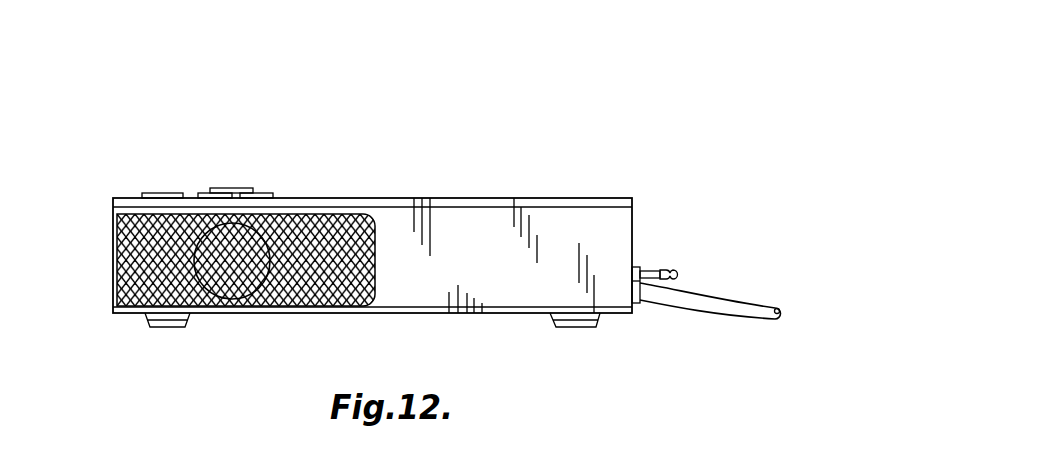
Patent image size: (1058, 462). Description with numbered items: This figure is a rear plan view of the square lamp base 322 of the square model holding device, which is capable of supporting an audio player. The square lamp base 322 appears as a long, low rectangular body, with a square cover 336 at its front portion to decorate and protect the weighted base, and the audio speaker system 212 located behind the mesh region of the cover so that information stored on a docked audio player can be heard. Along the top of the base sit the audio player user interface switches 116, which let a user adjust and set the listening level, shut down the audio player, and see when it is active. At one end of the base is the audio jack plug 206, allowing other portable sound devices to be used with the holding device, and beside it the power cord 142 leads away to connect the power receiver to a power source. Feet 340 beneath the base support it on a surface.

The audio player user interface switches 116 is at (160, 197).
The square lamp base 322 is at (503, 168).
The audio jack plug 206 is at (648, 271).
The power cord 142 is at (716, 306).
The square cover 336 is at (113, 287).
The audio speaker system 212 is at (222, 294).
The foot 340 is at (563, 326).